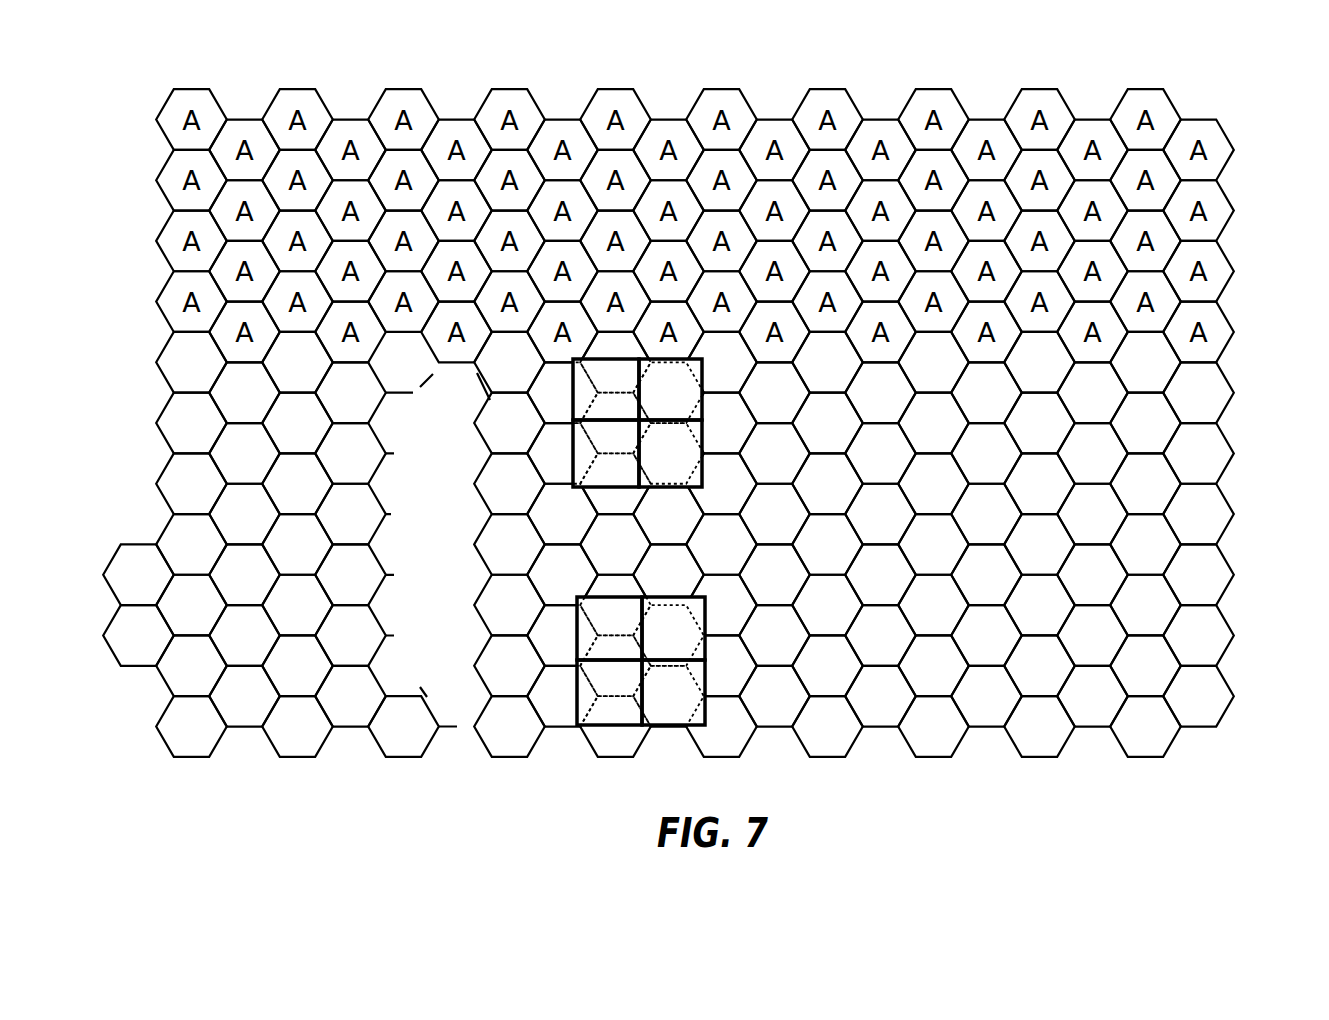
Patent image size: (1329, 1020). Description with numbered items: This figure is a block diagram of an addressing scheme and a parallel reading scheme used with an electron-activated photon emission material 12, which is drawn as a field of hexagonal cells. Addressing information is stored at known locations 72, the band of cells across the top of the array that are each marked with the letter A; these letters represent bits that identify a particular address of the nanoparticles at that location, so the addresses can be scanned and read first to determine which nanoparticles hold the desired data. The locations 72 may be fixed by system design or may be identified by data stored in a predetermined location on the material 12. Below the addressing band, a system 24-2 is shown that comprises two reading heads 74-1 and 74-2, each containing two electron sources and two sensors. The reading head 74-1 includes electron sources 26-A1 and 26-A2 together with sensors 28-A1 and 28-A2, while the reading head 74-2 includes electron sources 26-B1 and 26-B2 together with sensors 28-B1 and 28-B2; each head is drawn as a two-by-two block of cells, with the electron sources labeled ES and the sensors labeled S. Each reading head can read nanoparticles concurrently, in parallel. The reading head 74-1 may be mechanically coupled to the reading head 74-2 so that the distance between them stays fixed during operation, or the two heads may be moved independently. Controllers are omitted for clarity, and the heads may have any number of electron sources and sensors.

The electron-activated photon emission material 12 is at (202, 68).
The known locations 72 is at (1238, 90).
The system 24-2 is at (473, 362).
The reading head 74-1 is at (639, 424).
The reading head 74-2 is at (643, 666).
The electron source 26-A1 is at (583, 390).
The electron source 26-A2 is at (583, 452).
The sensor 28-A1 is at (687, 403).
The sensor 28-A2 is at (687, 465).
The electron source 26-B1 is at (583, 628).
The electron source 26-B2 is at (583, 690).
The sensor 28-B1 is at (692, 643).
The sensor 28-B2 is at (692, 707).